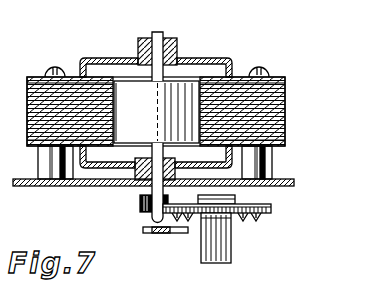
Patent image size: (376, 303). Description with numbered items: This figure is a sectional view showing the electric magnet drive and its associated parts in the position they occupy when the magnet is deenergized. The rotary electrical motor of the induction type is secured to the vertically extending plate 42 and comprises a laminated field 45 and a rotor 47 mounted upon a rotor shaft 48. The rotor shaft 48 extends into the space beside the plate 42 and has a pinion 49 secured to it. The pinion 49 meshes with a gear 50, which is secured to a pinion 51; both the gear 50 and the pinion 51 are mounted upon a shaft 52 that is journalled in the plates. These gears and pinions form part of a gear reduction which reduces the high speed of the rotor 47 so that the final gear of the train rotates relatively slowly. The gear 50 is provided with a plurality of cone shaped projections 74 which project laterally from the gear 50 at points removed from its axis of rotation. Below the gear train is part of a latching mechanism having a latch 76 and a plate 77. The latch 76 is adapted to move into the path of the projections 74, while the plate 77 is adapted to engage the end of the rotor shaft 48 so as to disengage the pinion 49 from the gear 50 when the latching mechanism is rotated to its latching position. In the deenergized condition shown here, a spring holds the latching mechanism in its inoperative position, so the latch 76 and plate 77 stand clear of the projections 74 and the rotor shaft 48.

The plate 42 is at (296, 189).
The laminated field 45 is at (287, 120).
The rotor 47 is at (184, 83).
The rotor shaft 48 is at (159, 32).
The pinion 49 is at (140, 205).
The gear 50 is at (272, 210).
The pinion 51 is at (232, 252).
The shaft 52 is at (222, 199).
The cone shaped projections 74 is at (258, 221).
The latch 76 is at (176, 235).
The plate 77 is at (148, 234).